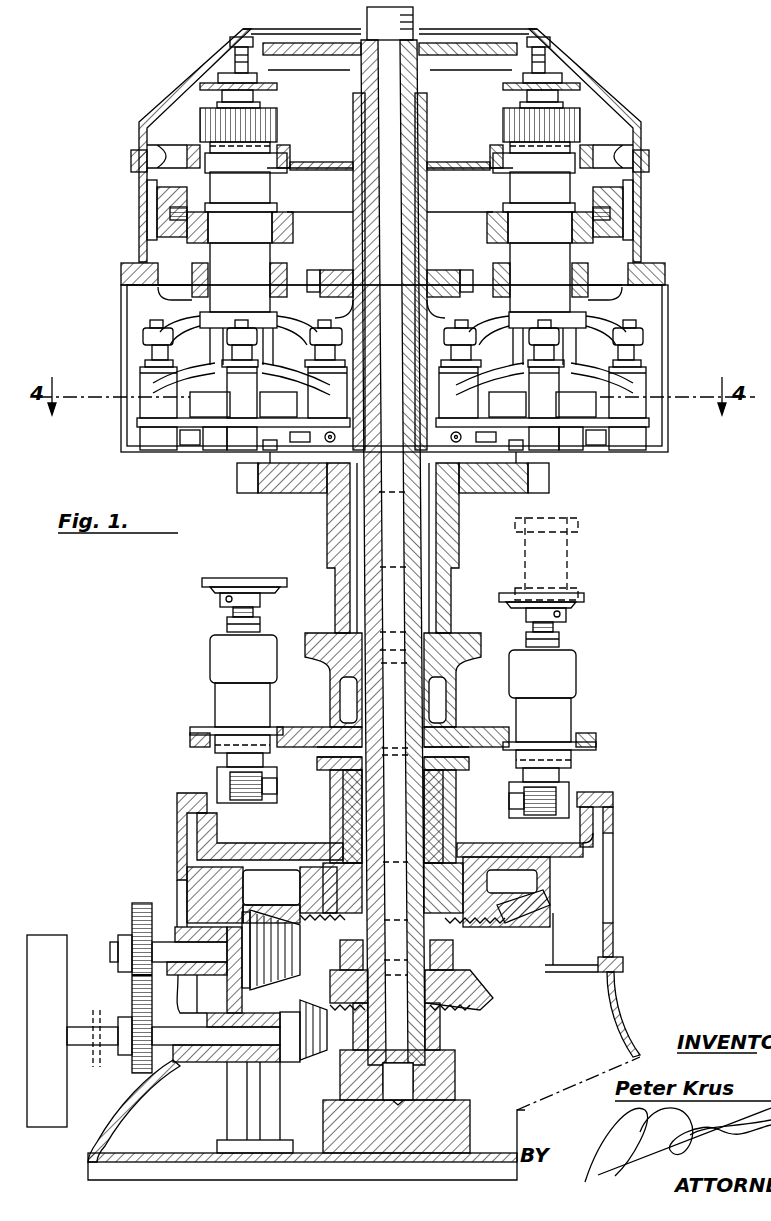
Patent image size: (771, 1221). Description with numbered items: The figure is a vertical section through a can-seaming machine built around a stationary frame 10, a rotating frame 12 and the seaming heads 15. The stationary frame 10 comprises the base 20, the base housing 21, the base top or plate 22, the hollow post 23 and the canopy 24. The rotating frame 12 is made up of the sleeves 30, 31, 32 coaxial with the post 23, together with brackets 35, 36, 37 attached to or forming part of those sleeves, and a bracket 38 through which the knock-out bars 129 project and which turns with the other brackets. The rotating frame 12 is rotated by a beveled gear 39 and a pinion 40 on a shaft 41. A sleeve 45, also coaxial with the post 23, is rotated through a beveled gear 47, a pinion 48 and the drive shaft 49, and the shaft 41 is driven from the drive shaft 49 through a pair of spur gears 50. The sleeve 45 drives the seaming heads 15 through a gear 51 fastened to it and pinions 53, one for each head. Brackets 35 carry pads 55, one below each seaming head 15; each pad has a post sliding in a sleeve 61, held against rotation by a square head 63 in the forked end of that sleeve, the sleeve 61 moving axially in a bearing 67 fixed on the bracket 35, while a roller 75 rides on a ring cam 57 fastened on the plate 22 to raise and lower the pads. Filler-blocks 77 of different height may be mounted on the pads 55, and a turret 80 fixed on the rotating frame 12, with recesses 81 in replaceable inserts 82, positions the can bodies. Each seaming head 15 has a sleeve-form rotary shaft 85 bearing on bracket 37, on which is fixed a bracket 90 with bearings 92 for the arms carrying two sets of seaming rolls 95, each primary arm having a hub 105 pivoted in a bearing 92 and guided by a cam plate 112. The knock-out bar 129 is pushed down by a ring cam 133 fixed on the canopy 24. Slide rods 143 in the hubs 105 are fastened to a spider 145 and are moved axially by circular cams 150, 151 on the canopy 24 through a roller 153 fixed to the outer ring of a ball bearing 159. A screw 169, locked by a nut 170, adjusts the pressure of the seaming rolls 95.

The stationary frame 10 is at (441, 1037).
The rotating frame 12 is at (540, 927).
The seaming heads 15 is at (130, 385).
The base 20 is at (470, 1130).
The base housing 21 is at (613, 828).
The base top or plate 22 is at (594, 792).
The hollow post 23 is at (442, 946).
The canopy 24 is at (646, 106).
The sleeve 30 is at (356, 823).
The sleeve 31 is at (336, 605).
The sleeve 32 is at (350, 196).
The bracket 35 is at (210, 737).
The bracket 36 is at (147, 262).
The bracket 37 is at (147, 122).
The bracket 38 is at (565, 85).
The beveled gear 39 is at (243, 877).
The pinion 40 is at (254, 918).
The shaft 41 is at (113, 950).
The sleeve 45 is at (358, 515).
The beveled gear 47 is at (306, 993).
The pinion 48 is at (312, 1062).
The drive shaft 49 is at (83, 1038).
The spur gears 50 is at (122, 982).
The gear 51 is at (300, 128).
The pinions 53 is at (212, 123).
The pads 55 is at (220, 599).
The ring cam 57 is at (180, 836).
The sleeve 61 is at (226, 762).
The square head 63 is at (548, 792).
The bearing 67 is at (220, 693).
The roller 75 is at (232, 790).
The filler-blocks 77 is at (568, 563).
The turret 80 is at (459, 540).
The recesses 81 is at (250, 480).
The replaceable inserts 82 is at (540, 493).
The rotary shaft 85 is at (520, 150).
The bracket 90 is at (200, 370).
The bearings 92 is at (698, 384).
The seaming rolls 95 is at (258, 494).
The hub 105 is at (634, 437).
The guide or cam plate 112 is at (160, 405).
The knock-out bar 129 is at (547, 60).
The ring cam 133 is at (552, 34).
The rods 143 is at (155, 350).
The spider 145 is at (604, 323).
The circular cam 150 is at (618, 237).
The circular cam 151 is at (147, 143).
The pin or roller 153 is at (155, 205).
The ball bearing 159 is at (246, 235).
The screw 169 is at (620, 448).
The nut 170 is at (182, 446).